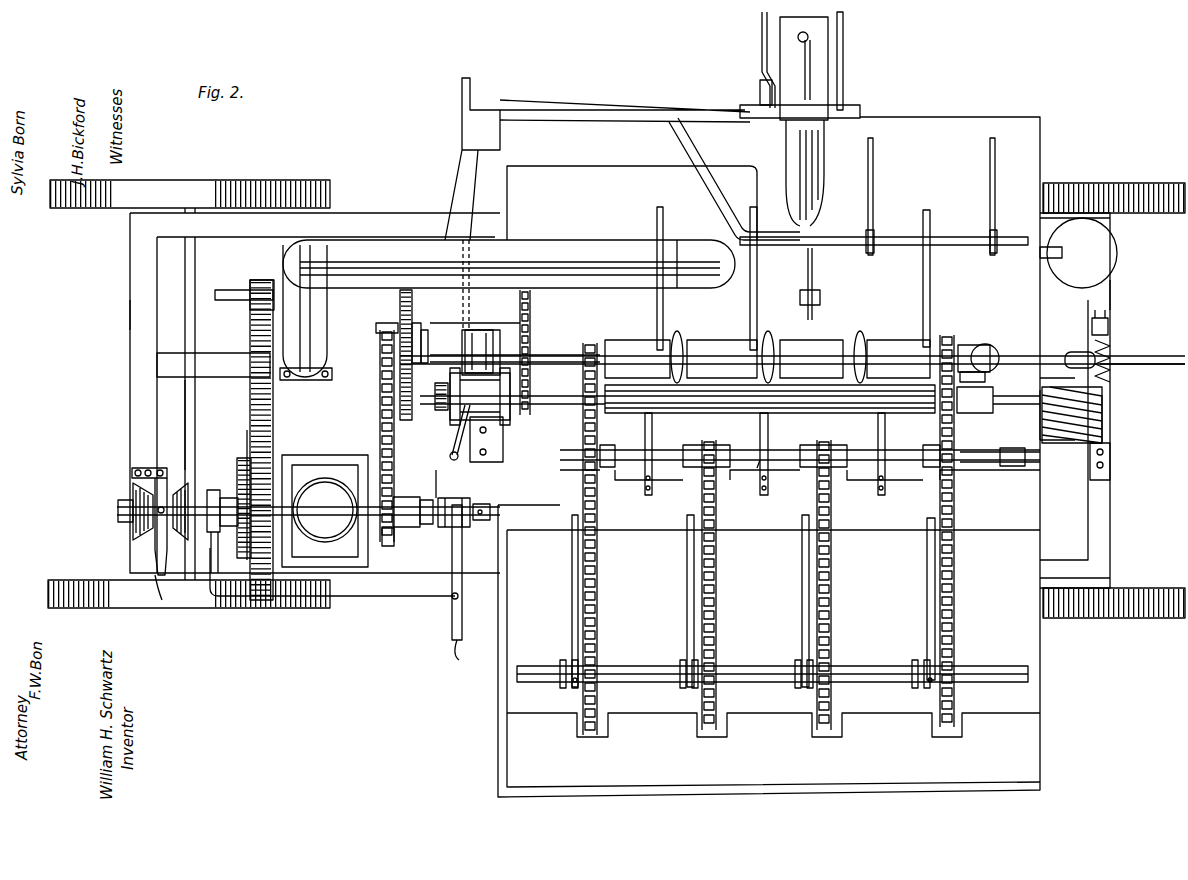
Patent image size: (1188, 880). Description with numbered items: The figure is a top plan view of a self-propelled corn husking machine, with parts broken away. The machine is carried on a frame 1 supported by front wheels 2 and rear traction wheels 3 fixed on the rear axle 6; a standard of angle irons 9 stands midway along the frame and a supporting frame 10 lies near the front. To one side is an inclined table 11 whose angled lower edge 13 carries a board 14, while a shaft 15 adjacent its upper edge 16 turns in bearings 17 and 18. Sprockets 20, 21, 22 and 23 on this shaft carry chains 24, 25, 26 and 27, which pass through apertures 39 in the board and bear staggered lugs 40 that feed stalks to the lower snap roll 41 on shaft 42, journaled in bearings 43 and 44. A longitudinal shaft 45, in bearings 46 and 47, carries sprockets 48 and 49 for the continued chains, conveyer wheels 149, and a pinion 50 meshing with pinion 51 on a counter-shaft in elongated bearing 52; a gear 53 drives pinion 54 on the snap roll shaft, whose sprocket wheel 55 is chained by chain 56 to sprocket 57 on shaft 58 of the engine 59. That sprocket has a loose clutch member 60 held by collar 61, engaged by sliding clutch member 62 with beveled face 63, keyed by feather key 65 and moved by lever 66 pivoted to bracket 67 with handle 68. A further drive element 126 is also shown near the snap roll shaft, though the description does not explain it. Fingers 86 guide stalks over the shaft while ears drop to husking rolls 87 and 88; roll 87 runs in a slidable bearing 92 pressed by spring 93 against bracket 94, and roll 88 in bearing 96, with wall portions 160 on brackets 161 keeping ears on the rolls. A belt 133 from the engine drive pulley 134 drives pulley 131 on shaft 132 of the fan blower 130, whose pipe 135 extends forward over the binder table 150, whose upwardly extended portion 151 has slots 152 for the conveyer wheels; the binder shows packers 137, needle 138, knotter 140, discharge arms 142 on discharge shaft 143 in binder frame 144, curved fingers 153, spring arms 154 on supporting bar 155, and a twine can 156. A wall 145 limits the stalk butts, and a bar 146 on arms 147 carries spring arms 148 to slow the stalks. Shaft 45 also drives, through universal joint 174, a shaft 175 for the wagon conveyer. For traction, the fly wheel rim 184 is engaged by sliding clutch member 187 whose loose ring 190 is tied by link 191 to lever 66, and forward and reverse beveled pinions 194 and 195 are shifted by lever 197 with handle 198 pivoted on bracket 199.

The frame 1 is at (130, 316).
The front wheels 2 is at (1083, 190).
The rear traction wheels 3 is at (296, 190).
The rear axle 6 is at (190, 410).
The angle irons 9 is at (518, 364).
The supporting frame 10 is at (985, 377).
The inclined table 11 is at (877, 605).
The lower edge 13 is at (545, 718).
The board 14 is at (759, 753).
The shaft 15 is at (775, 450).
The upper edge 16 is at (788, 470).
The bearing 17 is at (485, 463).
The bearing 18 is at (990, 455).
The sprocket 20 is at (606, 448).
The sprocket 21 is at (728, 448).
The sprocket 22 is at (840, 448).
The sprocket 23 is at (930, 446).
The chain 24 is at (598, 600).
The chain 25 is at (716, 598).
The chain 26 is at (830, 636).
The chain 27 is at (953, 632).
The apertures 39 is at (600, 730).
The lugs 40 is at (598, 560).
The lower snap roll 41 is at (674, 413).
The shaft 42 is at (570, 405).
The bearing 43 is at (480, 402).
The bearing 44 is at (998, 400).
The longitudinal shaft 45 is at (566, 354).
The bearing 46 is at (975, 345).
The bearing 47 is at (486, 355).
The sprocket 48 is at (598, 342).
The sprocket 49 is at (948, 340).
The pinion 50 is at (426, 330).
The pinion 51 is at (416, 323).
The elongated bearing 52 is at (466, 320).
The gear 53 is at (404, 292).
The pinion 54 is at (436, 410).
The sprocket wheel 55 is at (380, 340).
The chain 56 is at (380, 436).
The sprocket 57 is at (394, 538).
The shaft 58 is at (490, 512).
The engine 59 is at (325, 511).
The loose clutch member 60 is at (400, 497).
The collar 61 is at (427, 500).
The sliding clutch member 62 is at (470, 525).
The beveled face 63 is at (436, 530).
The feather key 65 is at (490, 508).
The lever 66 is at (462, 563).
The bracket 67 is at (462, 430).
The handle 68 is at (447, 652).
The fingers 86 is at (645, 450).
The husking roll 87 is at (1103, 418).
The husking roll 88 is at (1070, 442).
The bearing 92 is at (1103, 400).
The spring 93 is at (1112, 358).
The bracket 94 is at (1110, 330).
The bearing 96 is at (1103, 440).
The sprocket chain 126 is at (530, 300).
The fan blower 130 is at (305, 378).
The pulley 131 is at (245, 292).
The shaft 132 is at (258, 285).
The belt 133 is at (250, 338).
The drive pulley 134 is at (246, 445).
The pipe 135 is at (583, 250).
The packers 137 is at (840, 270).
The needle 138 is at (822, 282).
The knotter 140 is at (810, 172).
The discharge arms 142 is at (762, 50).
The discharge shaft 143 is at (860, 110).
The binder frame 144 is at (607, 100).
The wall 145 is at (497, 660).
The bar 146 is at (1030, 672).
The arms 147 is at (572, 594).
The spring arms 148 is at (573, 683).
The conveyer wheels 149 is at (672, 335).
The binder table 150 is at (919, 181).
The upwardly extended portion 151 is at (681, 359).
The slots 152 is at (845, 376).
The curved fingers 153 is at (663, 220).
The spring arms 154 is at (873, 160).
The supporting bar 155 is at (943, 232).
The twine can 156 is at (1078, 253).
The forwardly extending portion 160 is at (1040, 450).
The brackets 161 is at (1110, 470).
The universal joint 174 is at (1078, 352).
The shaft 175 is at (1150, 364).
The rim 184 is at (246, 462).
The sliding clutch member 187 is at (237, 480).
The loose ring 190 is at (212, 535).
The link 191 is at (238, 600).
The forward beveled driving pinion 194 is at (178, 483).
The reverse beveled driving pinion 195 is at (133, 490).
The lever 197 is at (155, 552).
The handle 198 is at (154, 590).
The bracket 199 is at (150, 470).